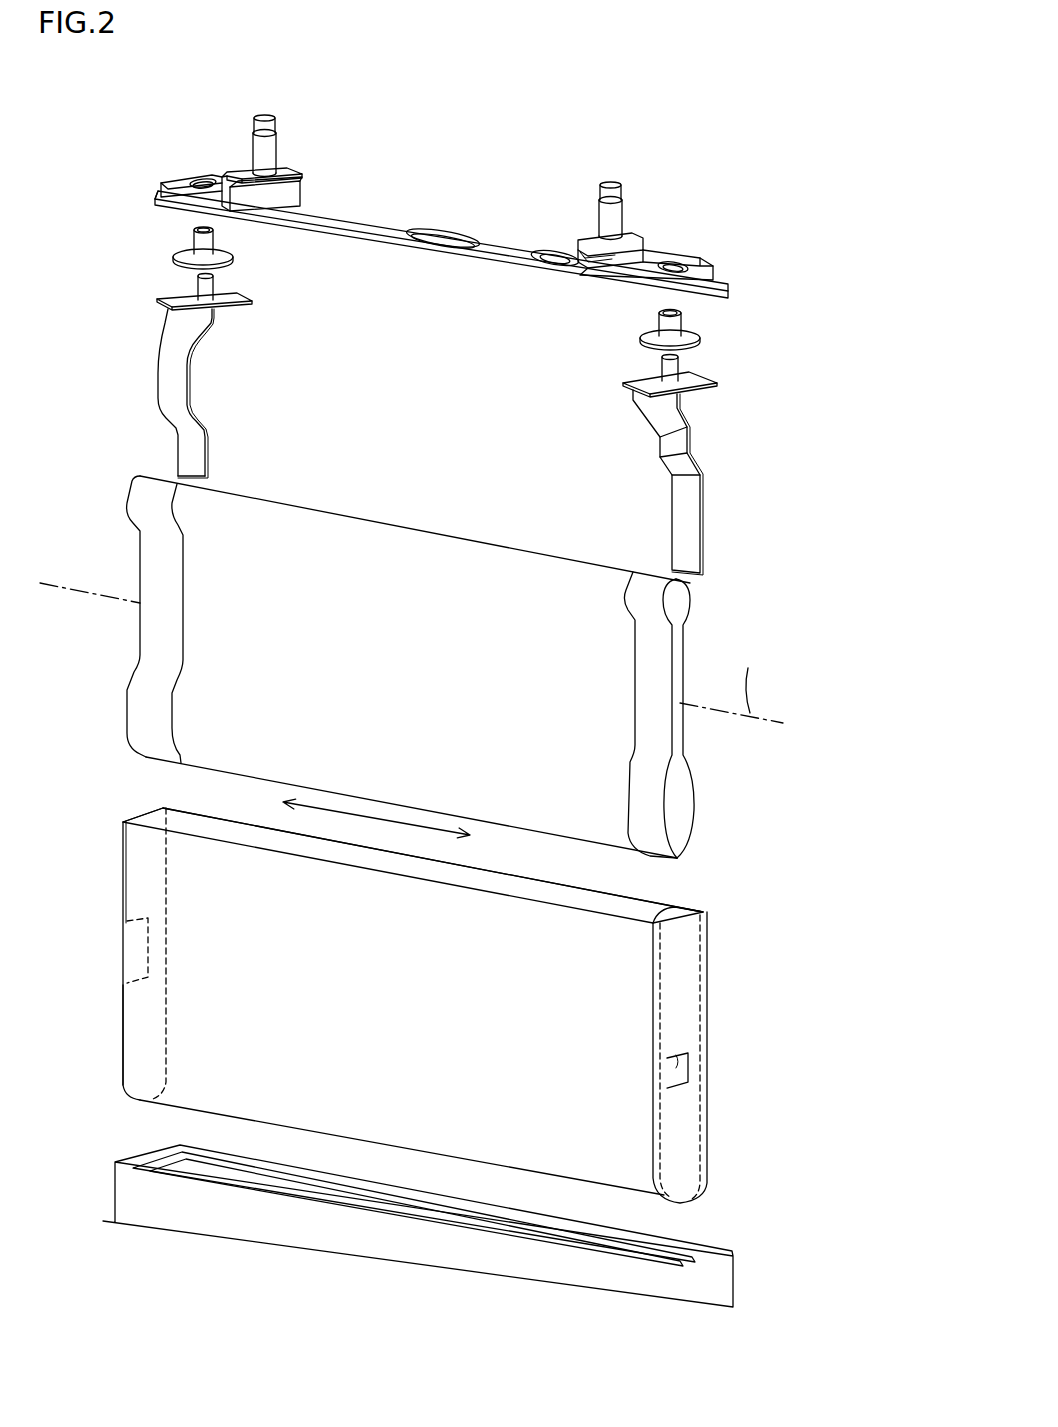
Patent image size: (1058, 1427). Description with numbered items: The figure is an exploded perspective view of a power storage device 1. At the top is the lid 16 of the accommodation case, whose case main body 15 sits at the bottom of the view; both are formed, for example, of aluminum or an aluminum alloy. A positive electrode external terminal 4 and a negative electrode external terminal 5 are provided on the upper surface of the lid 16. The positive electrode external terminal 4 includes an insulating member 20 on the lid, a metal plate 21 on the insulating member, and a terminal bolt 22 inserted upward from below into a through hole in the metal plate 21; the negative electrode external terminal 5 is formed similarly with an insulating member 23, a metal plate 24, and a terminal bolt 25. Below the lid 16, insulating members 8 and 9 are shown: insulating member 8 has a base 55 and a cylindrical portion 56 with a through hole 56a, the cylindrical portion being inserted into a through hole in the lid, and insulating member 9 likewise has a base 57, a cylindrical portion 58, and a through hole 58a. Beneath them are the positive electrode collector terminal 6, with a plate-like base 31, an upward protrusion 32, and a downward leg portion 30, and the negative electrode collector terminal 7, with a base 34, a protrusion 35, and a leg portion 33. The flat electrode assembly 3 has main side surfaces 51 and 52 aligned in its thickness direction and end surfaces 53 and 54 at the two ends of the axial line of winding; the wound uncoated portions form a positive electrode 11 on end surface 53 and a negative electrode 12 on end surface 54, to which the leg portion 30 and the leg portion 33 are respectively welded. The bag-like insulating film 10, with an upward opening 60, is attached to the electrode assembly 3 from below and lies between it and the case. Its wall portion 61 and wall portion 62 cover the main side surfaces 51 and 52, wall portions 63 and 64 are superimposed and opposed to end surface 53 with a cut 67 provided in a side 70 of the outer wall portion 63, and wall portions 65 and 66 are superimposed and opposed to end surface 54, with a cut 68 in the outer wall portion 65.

The power storage device 1 is at (438, 177).
The electrode assembly 3 is at (423, 540).
The positive electrode external terminal 4 is at (313, 47).
The negative electrode external terminal 5 is at (656, 112).
The positive electrode collector terminal 6 is at (313, 275).
The negative electrode collector terminal 7 is at (537, 353).
The insulating member 8 is at (92, 205).
The insulating member 9 is at (793, 298).
The insulating film 10 is at (739, 1006).
The positive electrode 11 is at (152, 637).
The negative electrode 12 is at (693, 818).
The case main body 15 is at (723, 1274).
The lid 16 is at (728, 292).
The insulating member 20 is at (302, 186).
The metal plate 21 is at (240, 172).
The terminal bolt 22 is at (268, 115).
The insulating member 23 is at (580, 252).
The metal plate 24 is at (650, 265).
The terminal bolt 25 is at (610, 182).
The leg portion 30 is at (192, 358).
The base 31 is at (224, 309).
The protrusion 32 is at (214, 282).
The leg portion 33 is at (670, 433).
The base 34 is at (647, 390).
The protrusion 35 is at (660, 363).
The main side surface 51 is at (520, 787).
The main side surface 52 is at (680, 666).
The end surface 53 is at (113, 559).
The end surface 54 is at (704, 746).
The base 55 is at (173, 258).
The cylindrical portion 56 is at (194, 229).
The through hole 56a is at (215, 226).
The base 57 is at (697, 342).
The cylindrical portion 58 is at (683, 315).
The through hole 58a is at (658, 315).
The opening 60 is at (617, 893).
The wall portion 61 is at (327, 1097).
The wall portion 62 is at (562, 892).
The wall portion 63 is at (122, 862).
The wall portion 64 is at (140, 811).
The wall portion 65 is at (677, 945).
The wall portion 66 is at (673, 905).
The cut 67 is at (150, 943).
The cut 68 is at (693, 1062).
The side 70 is at (127, 1018).